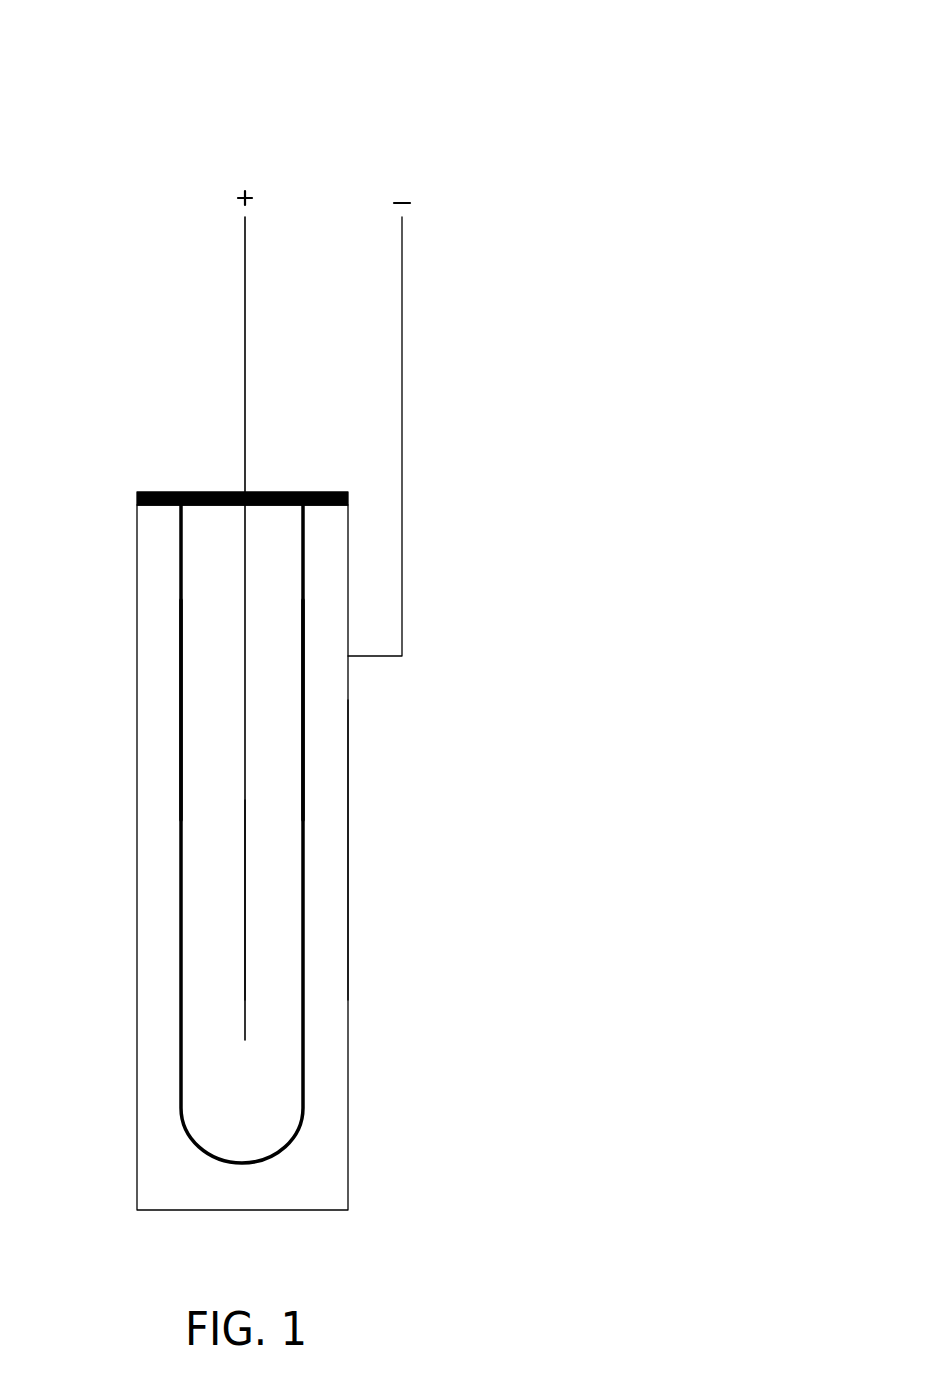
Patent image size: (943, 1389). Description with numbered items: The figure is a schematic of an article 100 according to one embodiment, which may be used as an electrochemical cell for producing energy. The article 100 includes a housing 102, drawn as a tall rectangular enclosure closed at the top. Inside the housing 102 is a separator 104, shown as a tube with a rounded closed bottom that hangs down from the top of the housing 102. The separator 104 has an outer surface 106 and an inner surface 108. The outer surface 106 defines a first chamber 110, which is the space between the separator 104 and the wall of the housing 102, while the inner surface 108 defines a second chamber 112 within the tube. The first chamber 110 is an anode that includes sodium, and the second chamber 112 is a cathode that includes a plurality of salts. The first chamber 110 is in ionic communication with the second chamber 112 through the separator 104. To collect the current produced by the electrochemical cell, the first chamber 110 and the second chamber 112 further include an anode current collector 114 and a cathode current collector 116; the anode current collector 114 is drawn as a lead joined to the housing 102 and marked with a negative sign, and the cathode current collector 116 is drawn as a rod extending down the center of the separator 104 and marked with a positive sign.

The article 100 is at (480, 70).
The housing 102 is at (137, 597).
The separator 104 is at (178, 1116).
The outer surface 106 is at (178, 709).
The inner surface 108 is at (183, 881).
The first chamber 110 is at (328, 895).
The second chamber 112 is at (293, 745).
The anode current collector 114 is at (403, 334).
The cathode current collector 116 is at (245, 352).